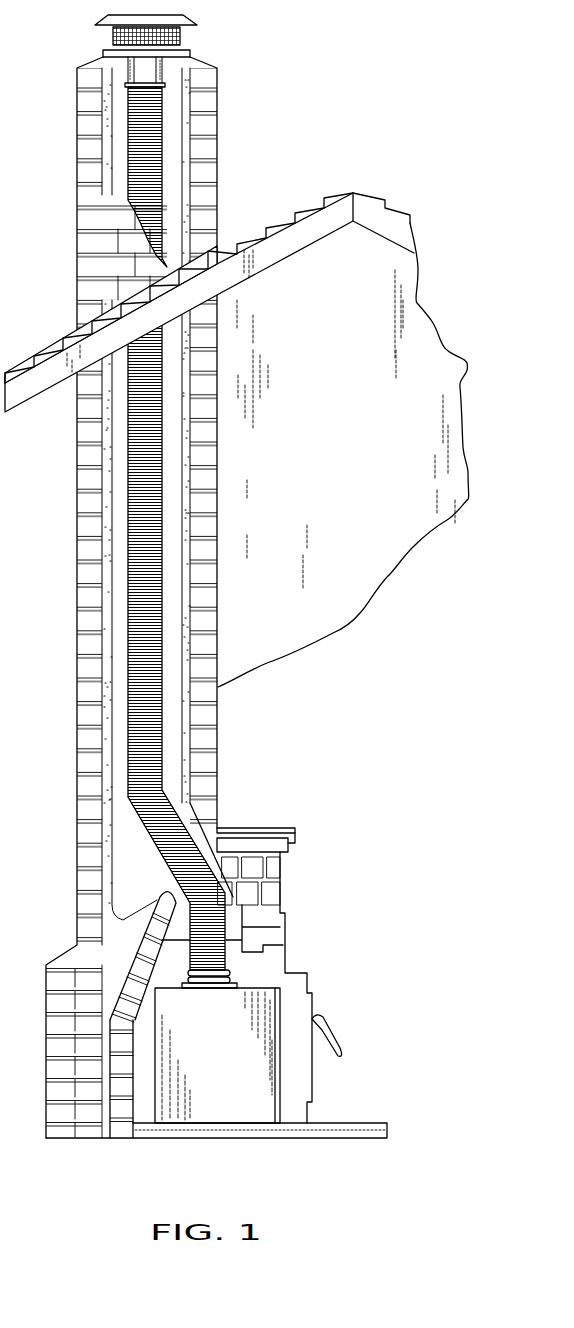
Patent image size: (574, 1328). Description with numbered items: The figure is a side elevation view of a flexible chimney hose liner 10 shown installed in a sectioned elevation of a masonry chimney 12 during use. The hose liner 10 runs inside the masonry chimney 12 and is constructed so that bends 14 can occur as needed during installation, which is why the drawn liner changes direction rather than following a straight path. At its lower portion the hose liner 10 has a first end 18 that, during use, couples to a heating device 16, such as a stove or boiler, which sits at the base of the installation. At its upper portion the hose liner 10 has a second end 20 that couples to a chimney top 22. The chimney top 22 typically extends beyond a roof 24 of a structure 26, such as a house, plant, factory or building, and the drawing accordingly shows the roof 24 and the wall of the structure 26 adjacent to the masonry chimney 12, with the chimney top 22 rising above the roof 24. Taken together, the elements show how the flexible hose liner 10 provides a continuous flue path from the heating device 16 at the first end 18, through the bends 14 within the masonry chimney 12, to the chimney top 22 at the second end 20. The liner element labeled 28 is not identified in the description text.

The flexible chimney hose liner 10 is at (207, 576).
The masonry chimney 12 is at (212, 125).
The bends 14 is at (129, 837).
The heating device 16 is at (253, 1063).
The first end 18 is at (227, 967).
The second end 20 is at (127, 90).
The chimney top 22 is at (180, 37).
The roof 24 is at (324, 228).
The structure 26 is at (337, 414).
The flexible chimney liner 28 is at (160, 563).